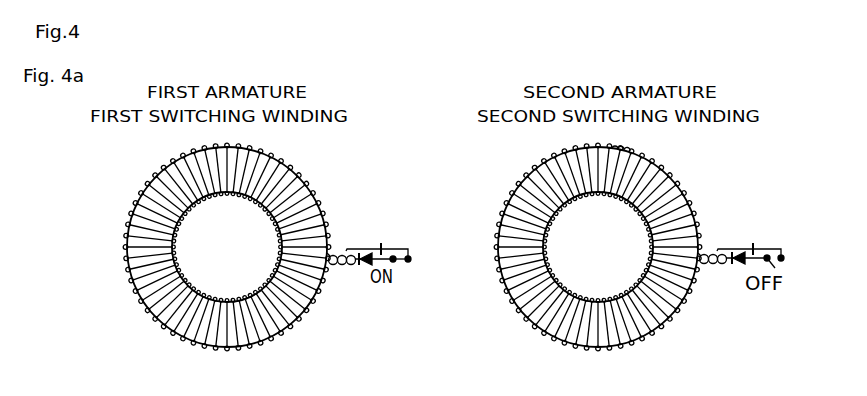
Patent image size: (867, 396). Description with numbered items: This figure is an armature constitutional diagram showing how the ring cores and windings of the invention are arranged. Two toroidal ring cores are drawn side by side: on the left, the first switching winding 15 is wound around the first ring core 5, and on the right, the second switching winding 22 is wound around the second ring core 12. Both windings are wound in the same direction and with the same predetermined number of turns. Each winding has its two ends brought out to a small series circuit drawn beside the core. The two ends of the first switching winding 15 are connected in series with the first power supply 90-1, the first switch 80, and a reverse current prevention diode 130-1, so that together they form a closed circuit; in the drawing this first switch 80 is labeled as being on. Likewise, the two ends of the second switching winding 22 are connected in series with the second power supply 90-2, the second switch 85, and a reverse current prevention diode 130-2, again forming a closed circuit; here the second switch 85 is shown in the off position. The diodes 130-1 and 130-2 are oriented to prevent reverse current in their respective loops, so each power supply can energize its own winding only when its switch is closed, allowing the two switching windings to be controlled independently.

The first switching winding 15 is at (128, 258).
The first ring core 5 is at (165, 303).
The second switching winding 22 is at (499, 257).
The second ring core 12 is at (534, 306).
The first power supply 90-1 is at (383, 245).
The second power supply 90-2 is at (752, 242).
The reverse current prevention diode 130-1 is at (366, 268).
The reverse current prevention diode 130-2 is at (738, 268).
The first switch 80 is at (403, 265).
The second switch 85 is at (782, 267).